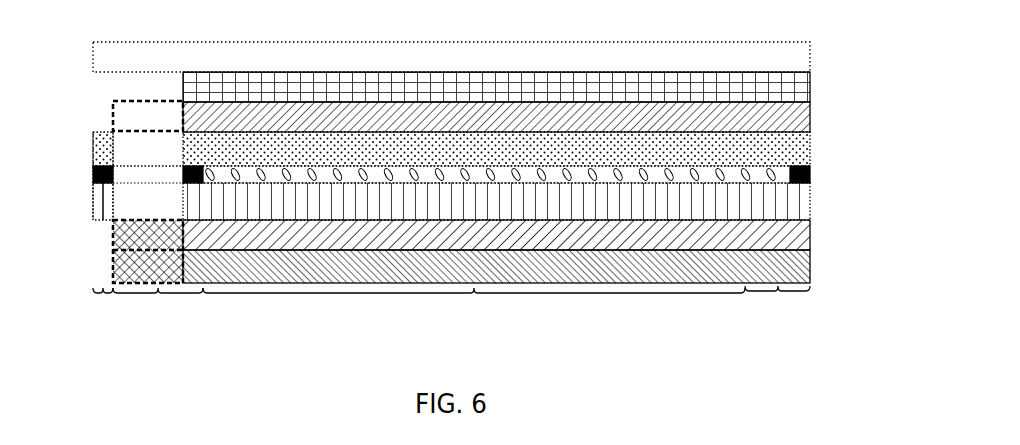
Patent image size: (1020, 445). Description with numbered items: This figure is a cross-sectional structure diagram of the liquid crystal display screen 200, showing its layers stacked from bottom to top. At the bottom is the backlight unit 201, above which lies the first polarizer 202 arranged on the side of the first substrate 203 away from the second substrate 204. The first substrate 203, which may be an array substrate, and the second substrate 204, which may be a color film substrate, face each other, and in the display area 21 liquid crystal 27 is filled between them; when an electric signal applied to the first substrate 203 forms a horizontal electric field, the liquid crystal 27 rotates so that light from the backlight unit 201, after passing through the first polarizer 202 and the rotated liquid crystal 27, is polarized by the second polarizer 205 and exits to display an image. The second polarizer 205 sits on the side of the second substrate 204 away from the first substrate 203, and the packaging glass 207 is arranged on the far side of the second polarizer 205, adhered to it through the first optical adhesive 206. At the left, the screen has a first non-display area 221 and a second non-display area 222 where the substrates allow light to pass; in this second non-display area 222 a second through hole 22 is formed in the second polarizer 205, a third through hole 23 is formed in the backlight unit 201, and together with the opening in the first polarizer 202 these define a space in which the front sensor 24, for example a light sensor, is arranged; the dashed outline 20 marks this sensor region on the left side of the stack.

The liquid crystal display screen 200 is at (783, 25).
The packaging glass 207 is at (810, 46).
The first optical adhesive 206 is at (810, 88).
The second polarizer 205 is at (810, 119).
The second substrate 204 is at (810, 153).
The first substrate 203 is at (810, 183).
The first polarizer 202 is at (810, 224).
The backlight unit 201 is at (810, 266).
The second through hole 22 is at (112, 110).
The liquid crystal 27 is at (235, 172).
The front sensor 24 is at (113, 232).
The bonding structure 20 is at (113, 250).
The third through hole 23 is at (113, 277).
The first non-display area 221 is at (447, 305).
The second non-display area 222 is at (158, 306).
The display area 21 is at (474, 308).